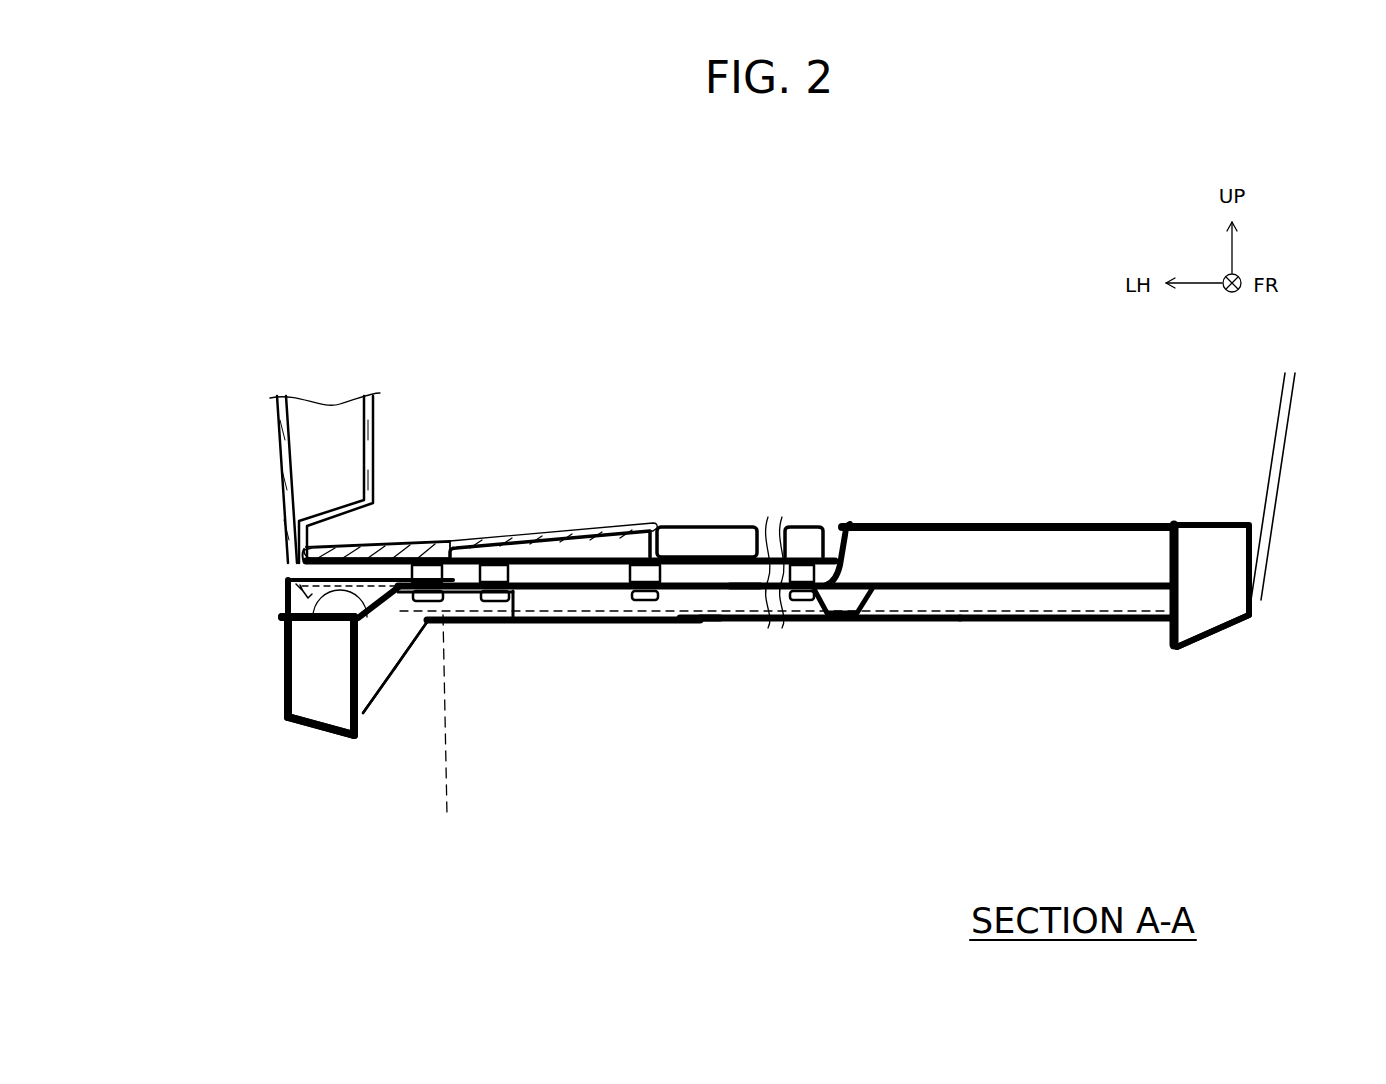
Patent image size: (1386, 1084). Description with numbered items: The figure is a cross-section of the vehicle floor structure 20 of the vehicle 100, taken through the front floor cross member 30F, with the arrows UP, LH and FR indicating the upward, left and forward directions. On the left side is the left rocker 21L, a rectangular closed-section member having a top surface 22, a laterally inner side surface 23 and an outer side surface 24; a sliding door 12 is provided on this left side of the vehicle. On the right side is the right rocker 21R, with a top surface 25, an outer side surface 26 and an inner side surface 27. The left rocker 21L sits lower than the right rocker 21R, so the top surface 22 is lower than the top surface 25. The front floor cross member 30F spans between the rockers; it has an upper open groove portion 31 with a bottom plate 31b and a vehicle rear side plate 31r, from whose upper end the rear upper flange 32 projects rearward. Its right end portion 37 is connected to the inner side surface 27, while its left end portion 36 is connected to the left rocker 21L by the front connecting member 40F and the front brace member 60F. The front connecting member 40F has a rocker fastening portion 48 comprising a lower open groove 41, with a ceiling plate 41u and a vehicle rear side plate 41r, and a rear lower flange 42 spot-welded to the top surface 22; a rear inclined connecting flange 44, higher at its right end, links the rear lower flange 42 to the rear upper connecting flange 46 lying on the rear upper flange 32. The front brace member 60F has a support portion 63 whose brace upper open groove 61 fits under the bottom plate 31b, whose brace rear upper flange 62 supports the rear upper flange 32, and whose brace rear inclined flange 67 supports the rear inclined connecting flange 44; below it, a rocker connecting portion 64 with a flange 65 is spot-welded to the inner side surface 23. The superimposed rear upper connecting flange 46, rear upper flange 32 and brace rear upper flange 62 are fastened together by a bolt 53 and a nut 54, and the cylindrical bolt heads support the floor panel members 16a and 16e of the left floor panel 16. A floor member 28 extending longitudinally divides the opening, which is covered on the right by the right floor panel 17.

The vehicle 100 is at (245, 270).
The sliding door 12 is at (275, 430).
The left floor panel 16 is at (912, 397).
The floor panel member 16a is at (613, 525).
The floor panel member 16e is at (803, 526).
The right floor panel 17 is at (1043, 522).
The vehicle floor structure 20 is at (1068, 745).
The left rocker 21L is at (290, 718).
The right rocker 21R is at (1215, 632).
The top surface 22 is at (283, 612).
The inner side surface 23 is at (350, 735).
The outer side surface 24 is at (288, 698).
The top surface 25 is at (1232, 513).
The outer side surface 26 is at (1277, 550).
The inner side surface 27 is at (1165, 637).
The floor member 28 is at (843, 620).
The front floor cross member 30F is at (1013, 622).
The upper open groove portion 31 is at (670, 621).
The bottom plate 31b is at (742, 621).
The vehicle rear side plate 31r is at (694, 624).
The rear upper flange 32 is at (713, 621).
The left end portion 36 is at (452, 731).
The right end portion 37 is at (1165, 628).
The front connecting member 40F is at (284, 592).
The lower open groove 41 is at (293, 583).
The vehicle rear side plate 41r is at (287, 594).
The ceiling plate 41u is at (405, 578).
The rear lower flange 42 is at (287, 603).
The rear inclined connecting flange 44 is at (287, 683).
The rear upper connecting flange 46 is at (345, 547).
The rocker fastening portion 48 is at (293, 577).
The bolt 53 is at (445, 580).
The nut 54 is at (520, 610).
The front brace member 60F is at (415, 655).
The brace upper open groove 61 is at (403, 668).
The brace rear upper flange 62 is at (447, 613).
The support portion 63 is at (422, 651).
The rocker connecting portion 64 is at (425, 670).
The flange 65 is at (363, 675).
The brace rear inclined flange 67 is at (372, 740).